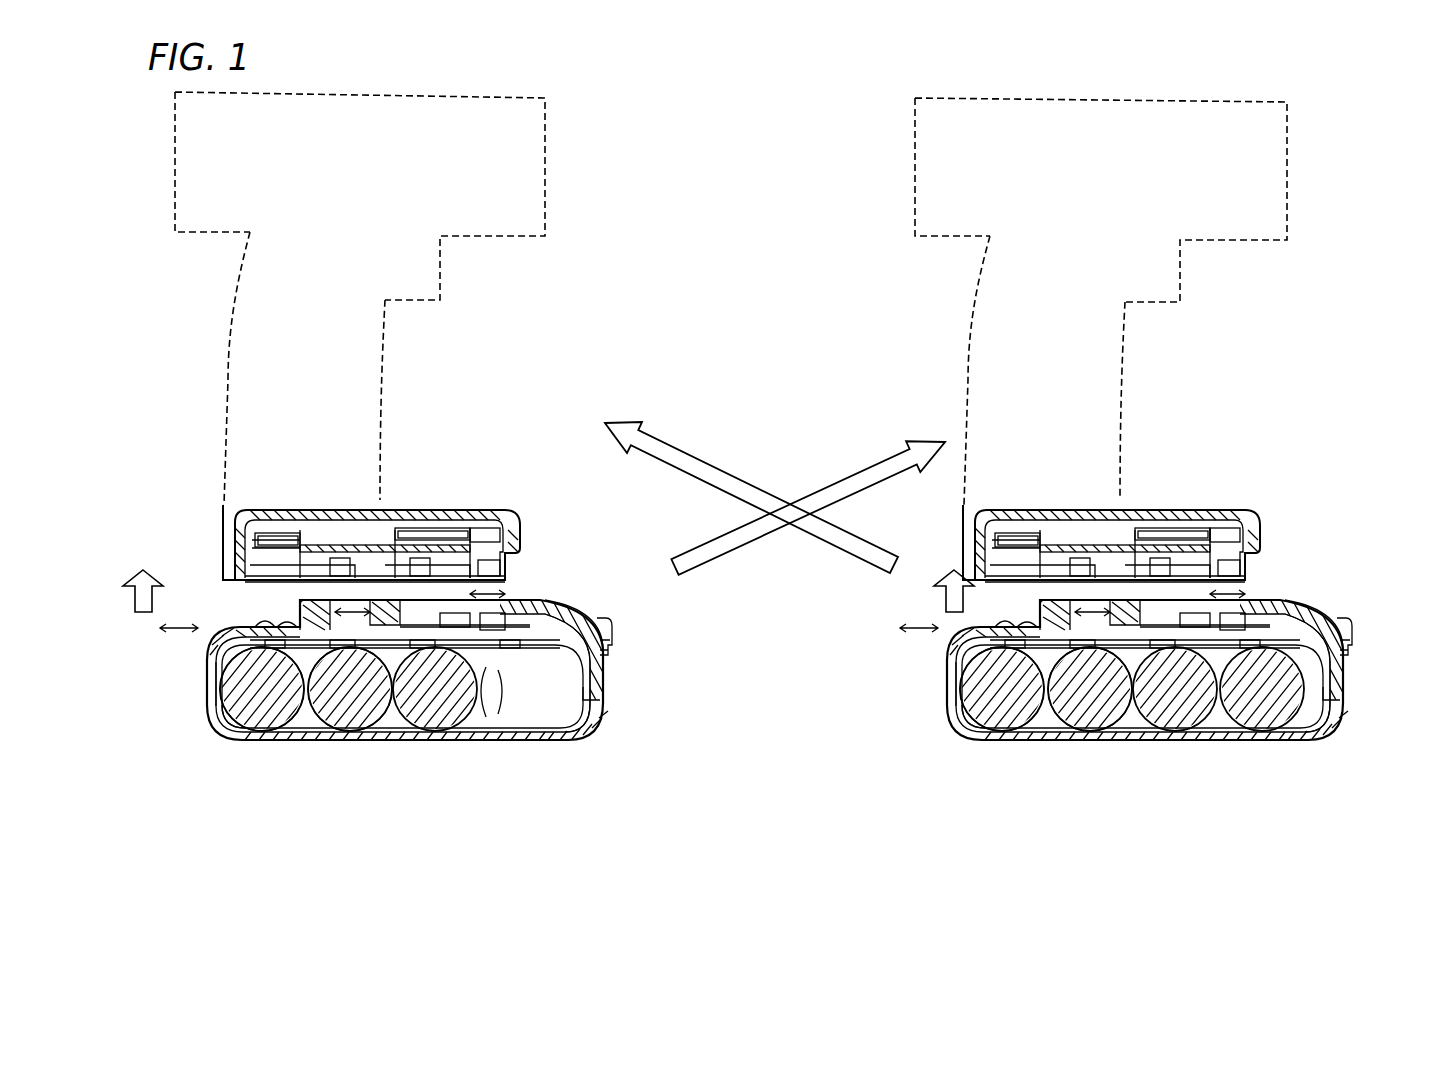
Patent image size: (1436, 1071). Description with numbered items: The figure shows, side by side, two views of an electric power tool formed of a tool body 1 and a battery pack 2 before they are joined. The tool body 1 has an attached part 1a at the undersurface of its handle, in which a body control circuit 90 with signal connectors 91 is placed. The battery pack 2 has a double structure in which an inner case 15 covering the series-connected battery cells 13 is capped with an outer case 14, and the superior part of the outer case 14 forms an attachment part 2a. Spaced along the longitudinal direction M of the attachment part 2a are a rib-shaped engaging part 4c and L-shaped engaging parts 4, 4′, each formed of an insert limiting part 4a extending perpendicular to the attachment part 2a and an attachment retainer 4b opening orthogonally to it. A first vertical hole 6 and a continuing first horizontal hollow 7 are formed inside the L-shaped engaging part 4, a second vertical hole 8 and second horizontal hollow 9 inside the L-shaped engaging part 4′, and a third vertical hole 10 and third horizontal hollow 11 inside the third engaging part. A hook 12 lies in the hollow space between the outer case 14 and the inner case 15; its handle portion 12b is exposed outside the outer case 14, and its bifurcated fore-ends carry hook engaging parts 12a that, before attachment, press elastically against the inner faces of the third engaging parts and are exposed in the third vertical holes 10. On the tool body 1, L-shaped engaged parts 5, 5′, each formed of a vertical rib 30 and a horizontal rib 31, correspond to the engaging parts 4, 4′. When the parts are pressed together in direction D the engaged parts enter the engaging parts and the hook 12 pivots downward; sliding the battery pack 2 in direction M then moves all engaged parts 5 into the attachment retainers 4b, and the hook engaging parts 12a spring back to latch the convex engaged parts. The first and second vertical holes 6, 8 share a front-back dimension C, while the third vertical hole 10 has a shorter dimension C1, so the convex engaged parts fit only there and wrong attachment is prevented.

The tool body 1 is at (232, 343).
The attached part 1a is at (245, 586).
The battery pack 2 is at (590, 614).
The attachment part 2a is at (560, 605).
The L-shaped engaging part 4 is at (413, 806).
The insert limiting part 4a is at (385, 625).
The attachment retainer 4b is at (597, 687).
The rib-shaped engaging part 4c is at (310, 600).
The L-shaped engaging part 4′ is at (447, 600).
The engaged part 5 is at (1298, 434).
The engaged part 5′ is at (455, 466).
The first vertical hole 6 is at (285, 705).
The first horizontal hollow 7 is at (330, 690).
The second vertical hole 8 is at (425, 630).
The second horizontal hollow 9 is at (465, 630).
The third vertical hole 10 is at (495, 640).
The third horizontal hollow 11 is at (588, 728).
The hook 12 is at (617, 633).
The hook engaging part 12a is at (520, 650).
The handle portion 12b is at (610, 647).
The battery cells 13 is at (258, 712).
The outer case 14 is at (563, 607).
The inner case 15 is at (215, 700).
The vertical rib 30 is at (345, 567).
The horizontal rib 31 is at (342, 572).
The body control circuit 90 is at (360, 540).
The signal connectors 91 is at (455, 640).
The front-back dimension C is at (207, 668).
The front-back dimension C1 is at (497, 582).
The direction D is at (330, 600).
The longitudinal direction M is at (549, 616).